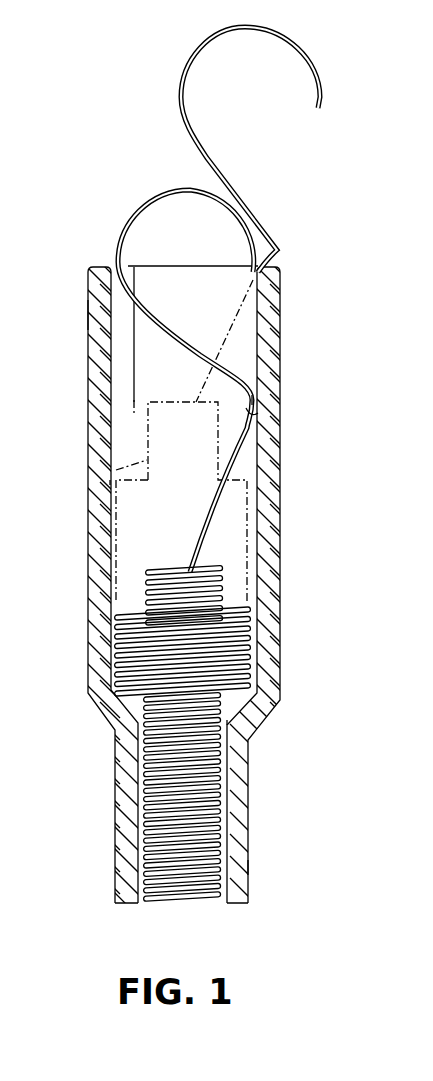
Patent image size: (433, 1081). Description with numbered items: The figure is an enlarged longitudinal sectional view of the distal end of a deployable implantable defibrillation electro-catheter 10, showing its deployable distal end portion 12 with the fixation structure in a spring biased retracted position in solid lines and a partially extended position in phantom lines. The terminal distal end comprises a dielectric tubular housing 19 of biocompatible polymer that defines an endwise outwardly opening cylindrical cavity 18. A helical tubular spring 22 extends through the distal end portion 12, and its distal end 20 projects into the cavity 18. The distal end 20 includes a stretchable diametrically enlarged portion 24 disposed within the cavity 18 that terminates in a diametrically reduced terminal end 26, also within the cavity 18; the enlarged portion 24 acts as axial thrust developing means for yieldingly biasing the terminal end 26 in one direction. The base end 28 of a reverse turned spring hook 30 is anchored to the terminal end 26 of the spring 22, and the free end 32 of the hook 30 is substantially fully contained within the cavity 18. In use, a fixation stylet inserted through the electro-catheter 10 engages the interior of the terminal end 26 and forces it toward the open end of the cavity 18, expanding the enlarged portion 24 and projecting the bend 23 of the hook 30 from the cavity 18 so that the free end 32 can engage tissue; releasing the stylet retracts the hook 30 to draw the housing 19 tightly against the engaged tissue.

The internally deployable electro-catheter 10 is at (248, 874).
The deployable distal end portion 12 is at (122, 836).
The cylindrical cavity 18 is at (118, 404).
The tubular housing 19 is at (88, 318).
The distal end of the helical tubular spring 20 is at (223, 703).
The helical tubular spring 22 is at (205, 800).
The bend of the reverse turned hook 23 is at (238, 413).
The stretchable diametrically enlarged portion 24 is at (247, 575).
The diametrically reduced terminal end 26 is at (92, 510).
The base end of the spring hook 28 is at (205, 523).
The reverse turned spring hook 30 is at (283, 398).
The free end of the spring hook 32 is at (147, 193).